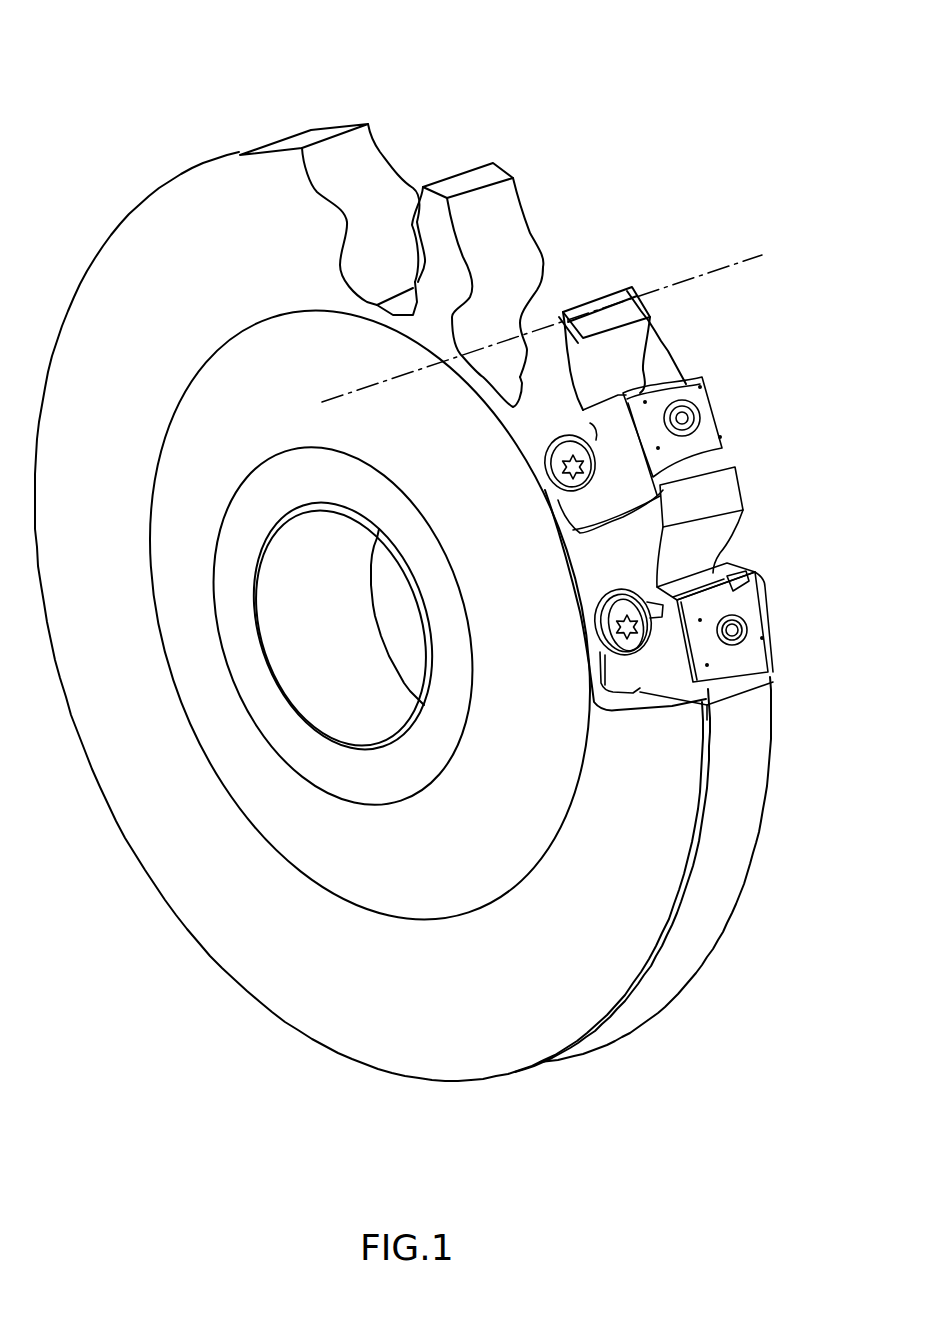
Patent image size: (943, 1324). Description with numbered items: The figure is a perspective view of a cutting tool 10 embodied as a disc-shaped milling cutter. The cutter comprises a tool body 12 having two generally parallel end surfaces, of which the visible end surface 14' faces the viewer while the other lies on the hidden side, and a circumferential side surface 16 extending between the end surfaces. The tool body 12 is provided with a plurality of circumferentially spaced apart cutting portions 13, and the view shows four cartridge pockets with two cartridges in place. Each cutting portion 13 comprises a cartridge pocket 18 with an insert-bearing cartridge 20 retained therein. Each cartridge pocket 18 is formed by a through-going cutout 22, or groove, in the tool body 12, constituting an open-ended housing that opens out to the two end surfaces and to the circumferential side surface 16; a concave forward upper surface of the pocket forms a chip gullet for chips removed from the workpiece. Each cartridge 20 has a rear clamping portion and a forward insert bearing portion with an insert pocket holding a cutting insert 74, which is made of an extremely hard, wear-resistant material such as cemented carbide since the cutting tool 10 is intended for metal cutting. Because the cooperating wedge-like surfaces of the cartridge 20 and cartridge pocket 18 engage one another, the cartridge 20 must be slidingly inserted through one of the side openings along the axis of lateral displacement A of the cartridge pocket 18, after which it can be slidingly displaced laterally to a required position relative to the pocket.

The cutting tool 10 is at (150, 58).
The tool body 12 is at (150, 857).
The cutting portion 13 is at (745, 425).
The end surface 14' is at (638, 722).
The circumferential side surface 16 is at (623, 300).
The cartridge pocket 18 is at (560, 240).
The cartridge 20 is at (772, 668).
The cutout 22 is at (550, 296).
The cutting insert 74 is at (699, 386).
The axis of lateral displacement A is at (740, 264).